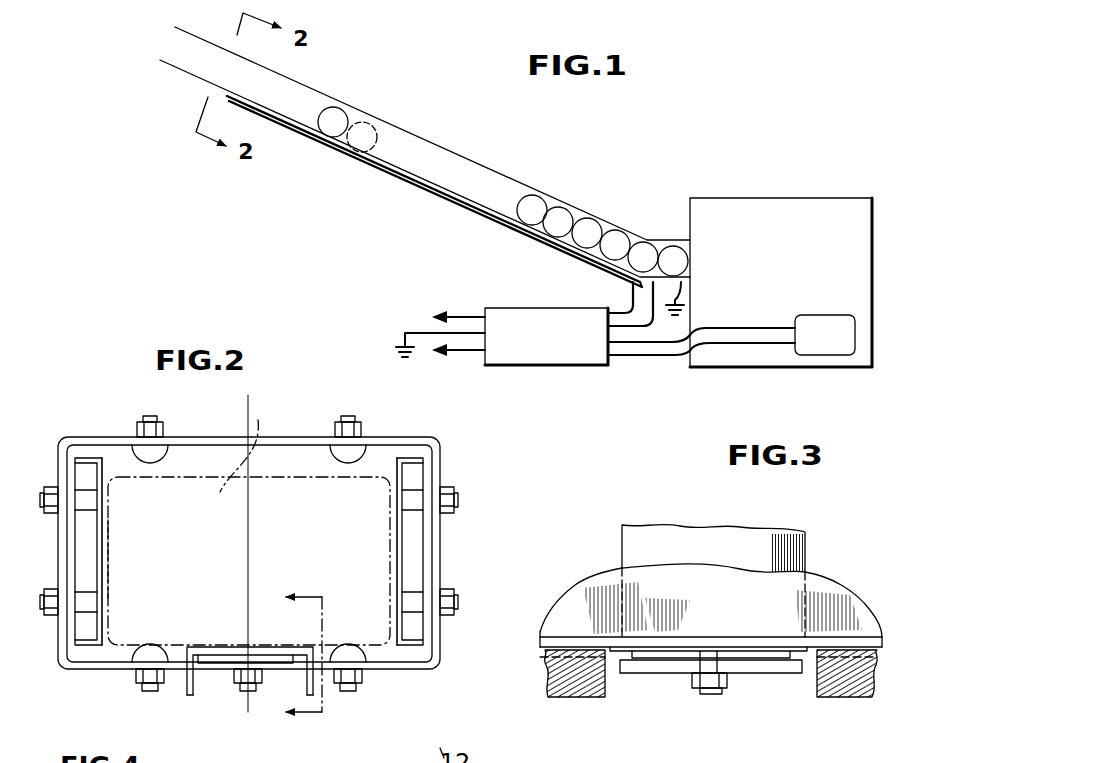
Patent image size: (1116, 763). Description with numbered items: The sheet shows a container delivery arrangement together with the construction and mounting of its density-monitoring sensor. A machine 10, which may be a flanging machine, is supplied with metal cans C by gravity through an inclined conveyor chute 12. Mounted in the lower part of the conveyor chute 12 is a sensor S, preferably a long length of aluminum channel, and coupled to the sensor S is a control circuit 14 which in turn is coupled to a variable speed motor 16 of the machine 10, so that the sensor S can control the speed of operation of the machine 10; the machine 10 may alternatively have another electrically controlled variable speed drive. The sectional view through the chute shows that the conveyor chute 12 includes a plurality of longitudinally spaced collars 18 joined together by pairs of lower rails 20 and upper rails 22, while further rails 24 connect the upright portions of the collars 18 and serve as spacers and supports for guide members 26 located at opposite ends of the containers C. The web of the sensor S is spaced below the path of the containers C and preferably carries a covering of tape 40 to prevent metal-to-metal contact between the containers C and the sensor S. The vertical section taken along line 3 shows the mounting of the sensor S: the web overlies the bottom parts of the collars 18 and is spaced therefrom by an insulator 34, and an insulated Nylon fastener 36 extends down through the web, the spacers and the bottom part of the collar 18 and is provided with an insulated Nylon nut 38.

In FIG. 1, the machine 10 is at (796, 224).
In FIG. 1, the conveyor chute 12 is at (470, 146).
In FIG. 2, the conveyor chute 12 is at (296, 428).
In FIG. 1, the control circuit 14 is at (566, 372).
In FIG. 1, the variable speed motor 16 is at (855, 350).
In FIG. 1, the sensor S is at (437, 194).
In FIG. 3, the sensor S is at (843, 690).
In FIG. 2, the collars 18 is at (62, 437).
In FIG. 3, the collars 18 is at (688, 528).
In FIG. 2, the lower rails 20 is at (147, 642).
In FIG. 2, the upper rails 22 is at (176, 452).
In FIG. 2, the rails 24 is at (82, 508).
In FIG. 2, the guide members 26 is at (110, 550).
In FIG. 3, the guide members 26 is at (820, 586).
In FIG. 2, the tape 40 is at (227, 647).
In FIG. 2, the metal cans C is at (247, 443).
In FIG. 2, the section line 3— 3 is at (301, 658).
In FIG. 3, the insulator 34 is at (663, 662).
In FIG. 3, the insulated fastener 36 is at (712, 692).
In FIG. 3, the insulated nut 38 is at (730, 684).